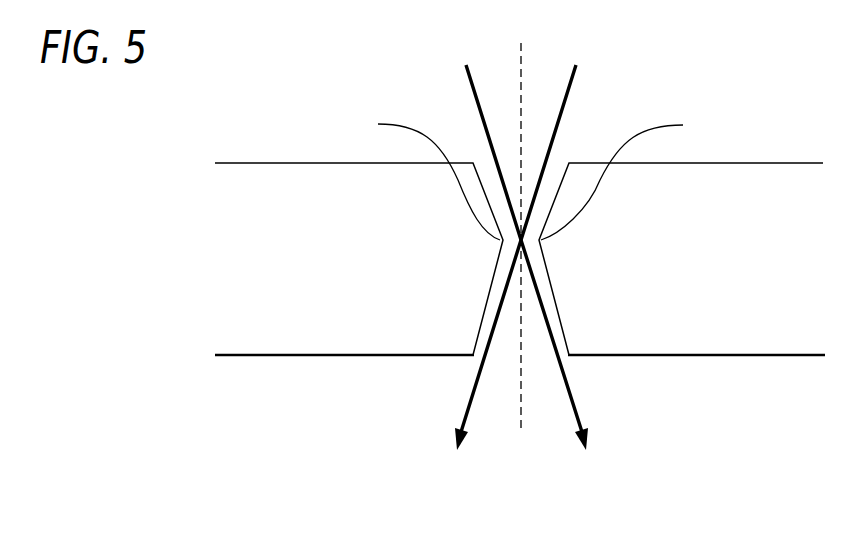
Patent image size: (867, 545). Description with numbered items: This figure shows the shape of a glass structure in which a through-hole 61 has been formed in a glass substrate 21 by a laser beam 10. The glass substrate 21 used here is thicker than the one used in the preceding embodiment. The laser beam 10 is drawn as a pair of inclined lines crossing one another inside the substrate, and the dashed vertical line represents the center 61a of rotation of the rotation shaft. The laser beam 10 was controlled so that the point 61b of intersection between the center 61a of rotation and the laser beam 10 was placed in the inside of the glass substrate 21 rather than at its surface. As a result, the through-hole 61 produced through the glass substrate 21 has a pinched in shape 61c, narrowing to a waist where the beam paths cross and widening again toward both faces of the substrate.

The glass substrate 21 is at (268, 177).
The laser beam 10 is at (577, 71).
The through-hole 61 is at (505, 372).
The center of rotation 61a is at (518, 61).
The point of intersection 61b is at (415, 177).
The pinched in shape 61c is at (633, 177).